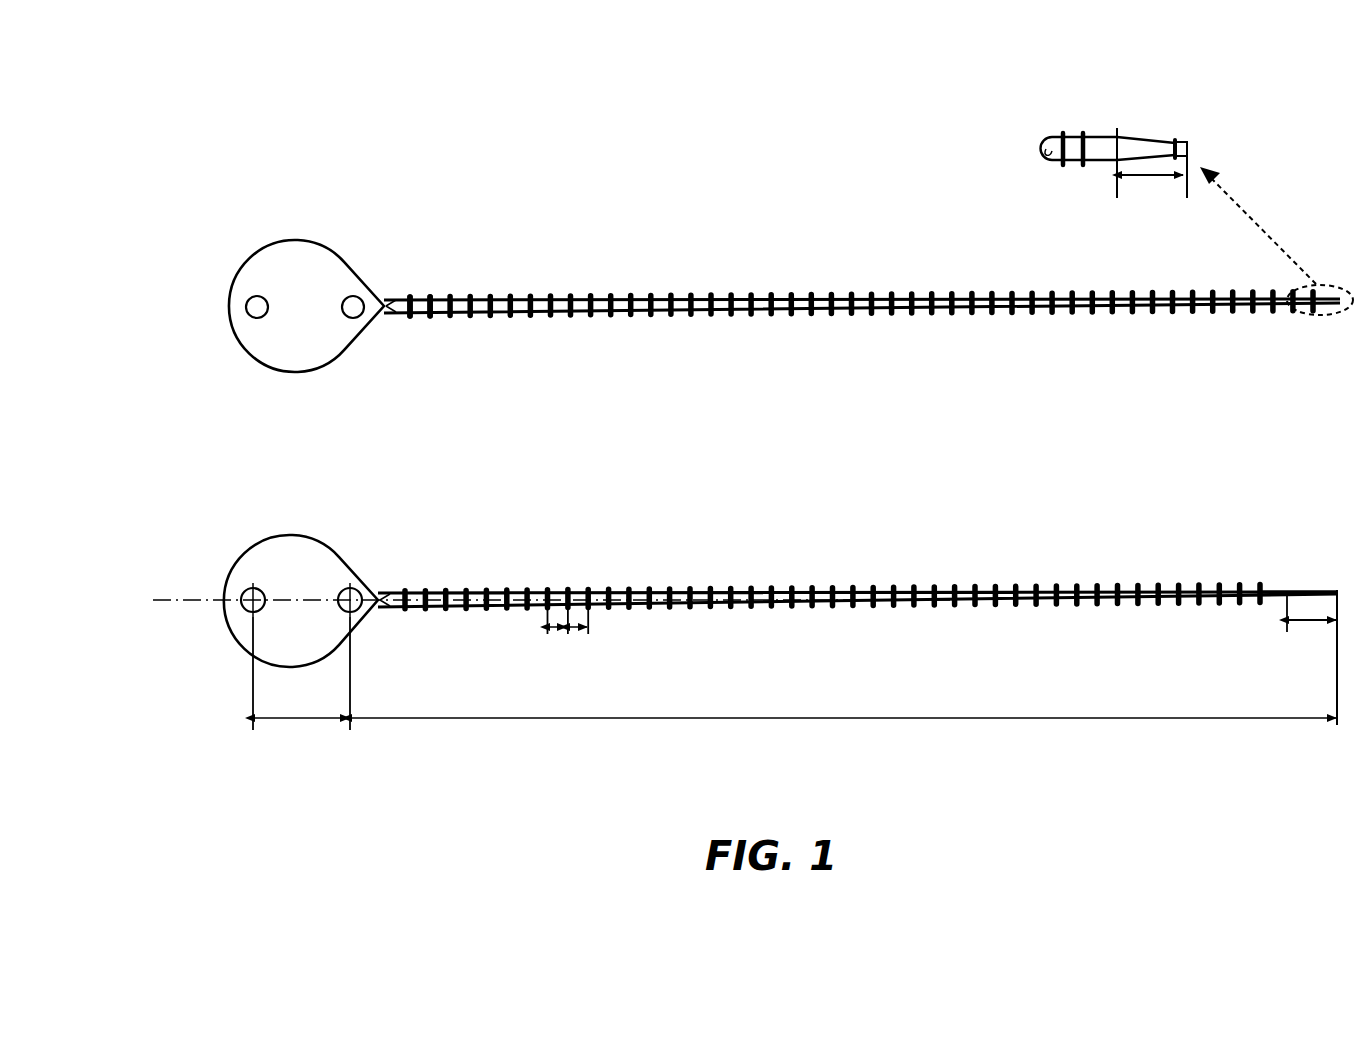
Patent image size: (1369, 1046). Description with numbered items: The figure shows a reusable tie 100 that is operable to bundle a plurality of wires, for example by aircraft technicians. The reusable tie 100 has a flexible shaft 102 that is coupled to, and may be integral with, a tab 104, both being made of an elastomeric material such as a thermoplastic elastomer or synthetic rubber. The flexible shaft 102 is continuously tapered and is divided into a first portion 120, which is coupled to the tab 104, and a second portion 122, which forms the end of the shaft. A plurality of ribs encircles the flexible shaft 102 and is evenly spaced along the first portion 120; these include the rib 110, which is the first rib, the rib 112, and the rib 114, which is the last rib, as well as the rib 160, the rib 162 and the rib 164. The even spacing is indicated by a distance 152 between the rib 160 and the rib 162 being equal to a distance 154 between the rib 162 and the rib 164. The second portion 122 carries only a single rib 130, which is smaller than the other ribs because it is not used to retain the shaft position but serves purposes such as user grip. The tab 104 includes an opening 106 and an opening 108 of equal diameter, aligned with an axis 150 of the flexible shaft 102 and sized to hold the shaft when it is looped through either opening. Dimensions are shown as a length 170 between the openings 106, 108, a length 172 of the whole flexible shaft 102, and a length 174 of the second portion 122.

The reusable tie 100 is at (246, 215).
The flexible shaft 102 is at (862, 291).
The tab 104 is at (251, 283).
The opening 106 is at (354, 318).
The opening 108 is at (246, 307).
The rib 110 is at (410, 318).
The rib 112 is at (432, 296).
The rib 114 is at (858, 291).
The first portion 120 is at (1092, 135).
The second portion 122 is at (1148, 389).
The single rib 130 is at (1208, 109).
The axis 150 is at (205, 602).
The distance 152 is at (559, 636).
The distance 154 is at (580, 636).
The rib 160 is at (547, 589).
The rib 162 is at (568, 589).
The rib 164 is at (589, 589).
The length 170 is at (300, 726).
The length 172 is at (765, 723).
The length 174 is at (1152, 182).